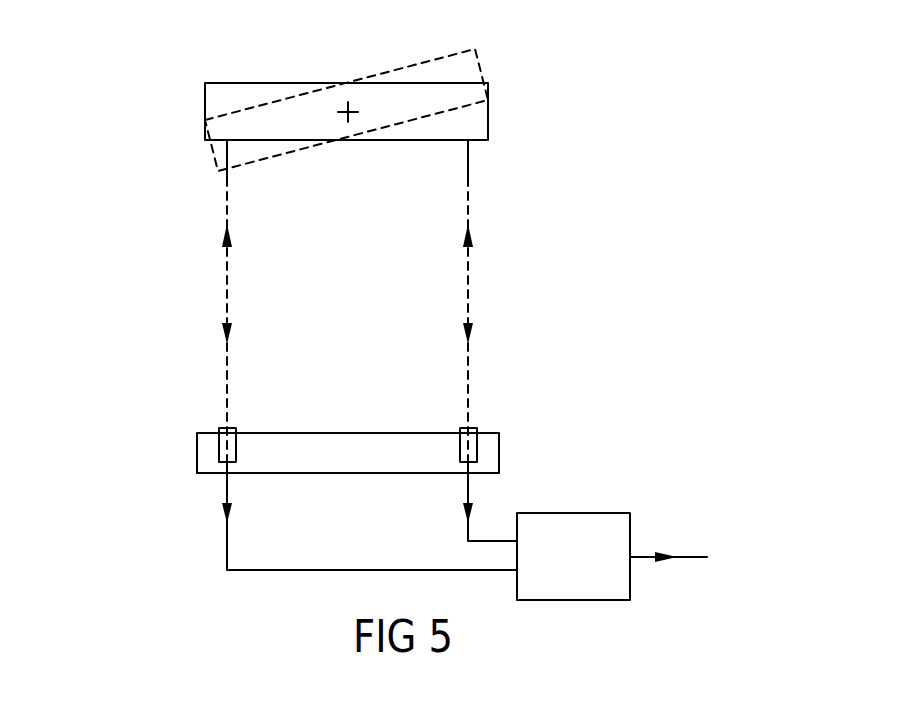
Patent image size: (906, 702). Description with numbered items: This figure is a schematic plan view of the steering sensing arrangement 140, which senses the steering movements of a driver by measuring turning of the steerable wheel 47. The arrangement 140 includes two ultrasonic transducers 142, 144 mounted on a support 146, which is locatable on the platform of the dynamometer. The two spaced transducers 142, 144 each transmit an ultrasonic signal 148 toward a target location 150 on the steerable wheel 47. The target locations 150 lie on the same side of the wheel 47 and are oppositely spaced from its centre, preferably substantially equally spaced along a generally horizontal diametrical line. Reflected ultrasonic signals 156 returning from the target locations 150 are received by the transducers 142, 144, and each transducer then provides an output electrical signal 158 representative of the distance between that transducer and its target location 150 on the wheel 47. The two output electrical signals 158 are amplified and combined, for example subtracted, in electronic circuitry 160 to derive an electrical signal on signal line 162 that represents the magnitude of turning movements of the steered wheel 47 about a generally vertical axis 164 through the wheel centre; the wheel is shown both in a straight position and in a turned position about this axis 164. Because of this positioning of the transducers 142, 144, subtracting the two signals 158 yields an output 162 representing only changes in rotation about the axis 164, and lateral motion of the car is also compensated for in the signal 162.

The steering sensing arrangement 140 is at (136, 269).
The steerable wheel 47 is at (489, 121).
The vertical axis 164 is at (348, 108).
The target location 150 is at (227, 142).
The ultrasonic signal 148 is at (227, 232).
The reflected ultrasonic signal 156 is at (227, 337).
The support 146 is at (208, 460).
The ultrasonic transducer 142 is at (227, 450).
The ultrasonic transducer 144 is at (473, 447).
The output electrical signal 158 is at (225, 517).
The electronic circuitry 160 is at (582, 528).
The signal line 162 is at (662, 557).